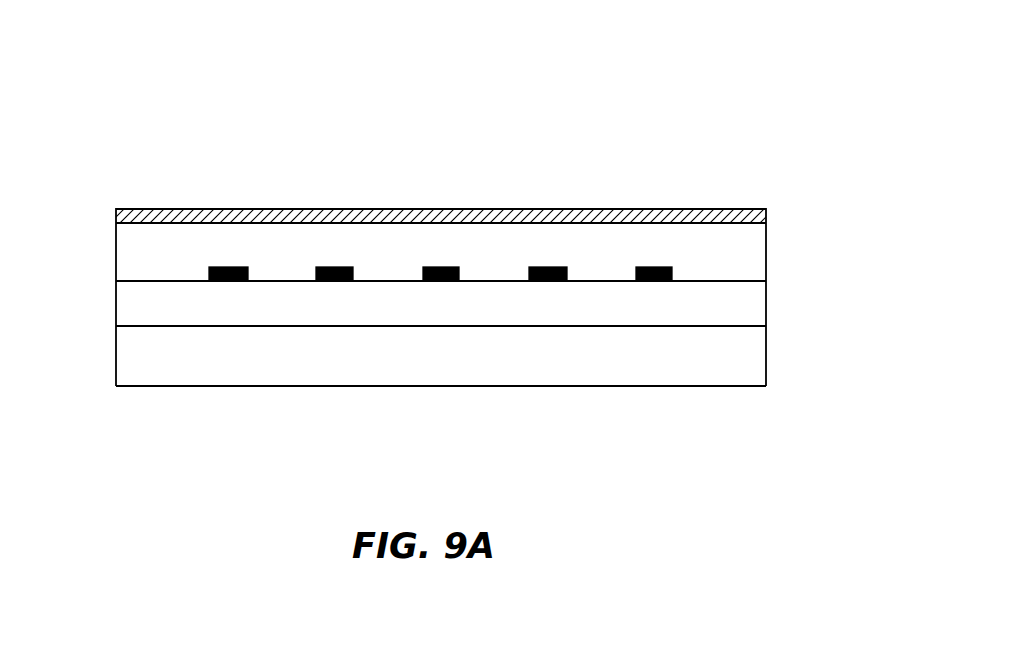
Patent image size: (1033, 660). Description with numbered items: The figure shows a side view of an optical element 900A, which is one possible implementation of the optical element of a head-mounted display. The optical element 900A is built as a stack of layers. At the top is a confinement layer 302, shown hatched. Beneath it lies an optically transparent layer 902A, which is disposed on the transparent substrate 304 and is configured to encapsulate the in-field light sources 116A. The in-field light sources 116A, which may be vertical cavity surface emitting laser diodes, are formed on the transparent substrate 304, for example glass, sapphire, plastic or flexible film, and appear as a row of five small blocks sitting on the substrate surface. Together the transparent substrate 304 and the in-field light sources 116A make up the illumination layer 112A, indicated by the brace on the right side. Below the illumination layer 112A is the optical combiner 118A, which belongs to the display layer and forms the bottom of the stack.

The optical element 900A is at (703, 113).
The confinement layer 302 is at (698, 212).
The optically transparent layer 902A is at (764, 247).
The illumination layer 112A is at (442, 296).
The in-field light sources 116A is at (433, 281).
The transparent substrate 304 is at (127, 310).
The optical combiner 118A is at (756, 362).